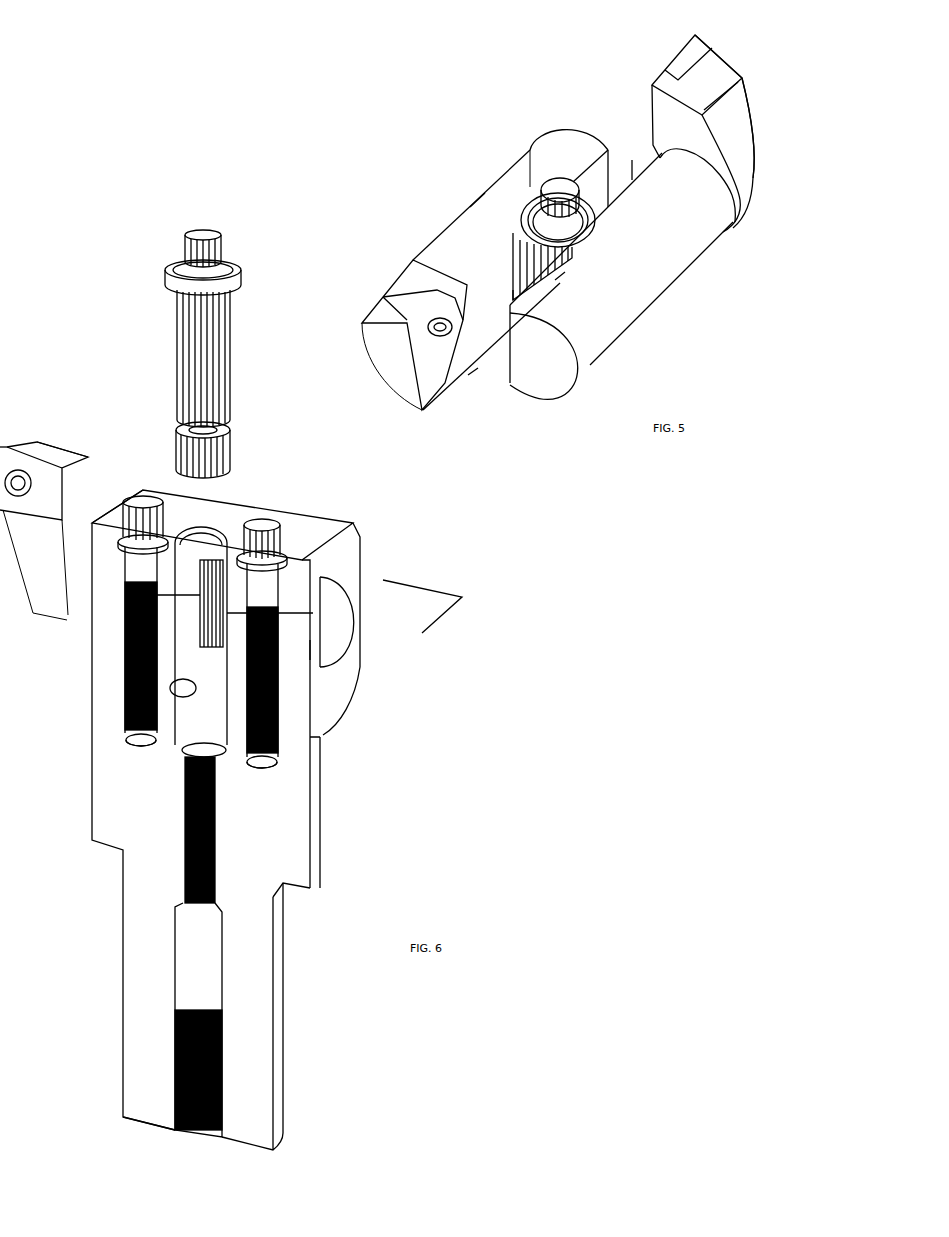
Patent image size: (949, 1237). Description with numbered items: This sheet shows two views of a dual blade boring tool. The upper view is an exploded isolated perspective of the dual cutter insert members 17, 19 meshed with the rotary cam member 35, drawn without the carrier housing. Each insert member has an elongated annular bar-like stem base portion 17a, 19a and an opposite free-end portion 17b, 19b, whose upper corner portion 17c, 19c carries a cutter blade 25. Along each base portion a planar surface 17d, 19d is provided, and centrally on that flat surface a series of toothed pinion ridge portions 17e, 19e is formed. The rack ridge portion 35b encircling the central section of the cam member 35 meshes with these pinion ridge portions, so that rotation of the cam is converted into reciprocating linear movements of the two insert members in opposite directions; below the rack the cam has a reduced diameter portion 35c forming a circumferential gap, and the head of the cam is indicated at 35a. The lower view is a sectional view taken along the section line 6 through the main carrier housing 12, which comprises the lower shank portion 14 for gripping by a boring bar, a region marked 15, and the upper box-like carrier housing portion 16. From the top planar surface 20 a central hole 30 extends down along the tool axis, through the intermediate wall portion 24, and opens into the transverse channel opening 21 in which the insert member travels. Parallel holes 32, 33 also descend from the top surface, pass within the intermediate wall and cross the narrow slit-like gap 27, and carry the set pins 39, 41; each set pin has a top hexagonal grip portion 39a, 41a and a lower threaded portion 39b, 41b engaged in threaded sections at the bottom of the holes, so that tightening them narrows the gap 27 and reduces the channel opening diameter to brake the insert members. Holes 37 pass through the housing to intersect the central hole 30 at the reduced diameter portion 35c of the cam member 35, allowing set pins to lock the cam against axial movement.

In FIG. 6, the section line 6 is at (425, 607).
In FIG. 6, the main carrier housing 12 is at (287, 813).
In FIG. 6, the lower shank portion 14 is at (263, 955).
In FIG. 6, the shank portion 15 is at (225, 1020).
In FIG. 6, the carrier housing portion 16 is at (330, 702).
In FIG. 5, the cutter insert member 17 is at (508, 172).
In FIG. 6, the stem base portion 17a is at (63, 537).
In FIG. 5, the free-end portion 17b is at (397, 360).
In FIG. 6, the free-end portion 17b is at (103, 523).
In FIG. 5, the upper corner portion 17c is at (477, 220).
In FIG. 6, the upper corner portion 17c is at (40, 440).
In FIG. 5, the planar surface 17d is at (470, 340).
In FIG. 6, the planar surface 17d is at (82, 623).
In FIG. 5, the pinion ridge portions 17e is at (513, 303).
In FIG. 6, the pinion ridge portions 17e is at (220, 660).
In FIG. 5, the cutter insert member 19 is at (637, 300).
In FIG. 5, the stem base portion 19a is at (697, 247).
In FIG. 5, the free-end portion 19b is at (743, 153).
In FIG. 5, the upper corner portion 19c is at (717, 63).
In FIG. 5, the planar surface 19d is at (632, 177).
In FIG. 5, the pinion ridge portions 19e is at (558, 283).
In FIG. 6, the top planar surface 20 is at (320, 523).
In FIG. 6, the channel opening 21 is at (347, 597).
In FIG. 6, the intermediate wall portion 24 is at (312, 650).
In FIG. 5, the cutter blade 25 is at (698, 44).
In FIG. 6, the slit-like opening or gap 27 is at (97, 590).
In FIG. 6, the hole 30 is at (220, 517).
In FIG. 6, the hole 32 is at (140, 743).
In FIG. 6, the hole 33 is at (280, 755).
In FIG. 5, the cam member 35 is at (530, 150).
In FIG. 6, the cam member 35 is at (195, 336).
In FIG. 5, the bolt head 35a is at (560, 178).
In FIG. 6, the bolt head 35a is at (203, 228).
In FIG. 5, the rack ridge portion 35b is at (513, 252).
In FIG. 6, the rack ridge portion 35b is at (237, 333).
In FIG. 6, the reduced diameter portion 35c is at (230, 423).
In FIG. 6, the holes 37 is at (220, 703).
In FIG. 6, the set pin 39 is at (105, 566).
In FIG. 6, the hexagonal shaped grip portion 39a is at (145, 490).
In FIG. 6, the threaded circumferential portion 39b is at (127, 667).
In FIG. 6, the set pin 41 is at (306, 610).
In FIG. 6, the hexagonal shaped grip portion 41a is at (267, 510).
In FIG. 6, the threaded circumferential portion 41b is at (277, 723).